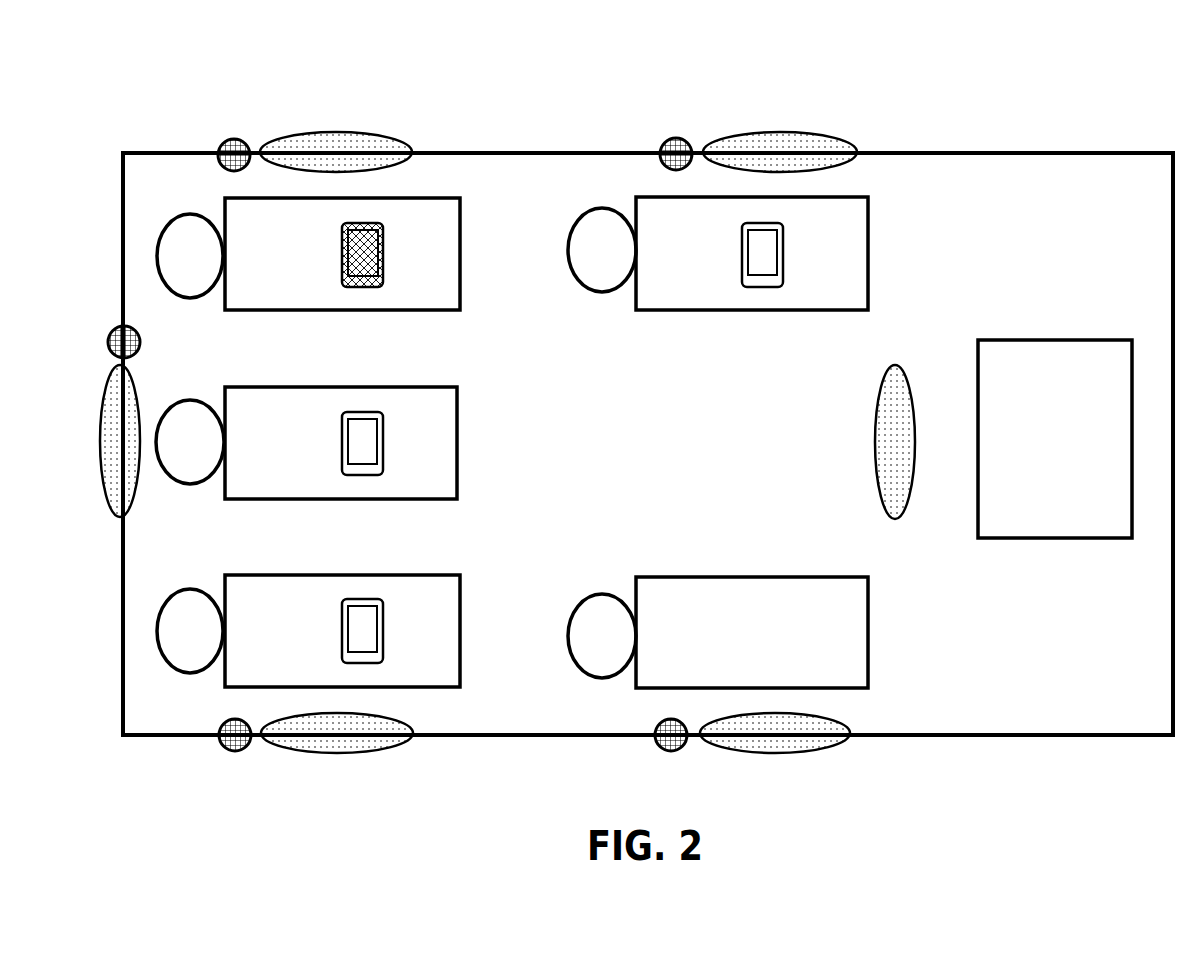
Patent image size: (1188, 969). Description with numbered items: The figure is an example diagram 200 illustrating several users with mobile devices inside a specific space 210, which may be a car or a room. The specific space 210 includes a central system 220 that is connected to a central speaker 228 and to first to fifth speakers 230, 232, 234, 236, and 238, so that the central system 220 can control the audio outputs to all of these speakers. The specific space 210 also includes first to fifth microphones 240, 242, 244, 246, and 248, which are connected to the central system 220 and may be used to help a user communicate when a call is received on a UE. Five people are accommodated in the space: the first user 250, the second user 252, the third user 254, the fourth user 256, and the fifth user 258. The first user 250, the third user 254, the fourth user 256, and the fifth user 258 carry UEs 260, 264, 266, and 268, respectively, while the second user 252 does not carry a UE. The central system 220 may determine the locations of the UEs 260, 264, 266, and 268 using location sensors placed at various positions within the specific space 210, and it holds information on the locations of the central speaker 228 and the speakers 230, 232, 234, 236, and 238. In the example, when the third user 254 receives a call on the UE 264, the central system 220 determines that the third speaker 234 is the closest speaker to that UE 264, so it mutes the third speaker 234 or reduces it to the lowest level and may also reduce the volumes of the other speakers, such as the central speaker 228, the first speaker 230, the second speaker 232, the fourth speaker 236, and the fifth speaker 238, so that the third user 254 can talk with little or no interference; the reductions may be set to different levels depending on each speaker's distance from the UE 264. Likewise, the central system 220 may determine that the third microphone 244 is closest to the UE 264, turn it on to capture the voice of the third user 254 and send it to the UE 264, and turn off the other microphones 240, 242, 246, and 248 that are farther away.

The example diagram 200 is at (72, 99).
The specific space 210 is at (192, 153).
The central system 220 is at (1072, 462).
The central speaker 228 is at (877, 410).
The first speaker 230 is at (798, 132).
The second speaker 232 is at (815, 752).
The third speaker 234 is at (367, 133).
The fourth speaker 236 is at (100, 417).
The fifth speaker 238 is at (362, 753).
The first microphone 240 is at (683, 139).
The second microphone 242 is at (677, 752).
The third microphone 244 is at (242, 140).
The fourth microphone 246 is at (112, 337).
The fifth microphone 248 is at (233, 753).
The User 1 250 is at (700, 279).
The User 2 252 is at (700, 654).
The User 3 254 is at (293, 279).
The User 4 256 is at (293, 466).
The User 5 258 is at (293, 652).
The UE 260 is at (783, 253).
The UE 264 is at (383, 249).
The UE 266 is at (383, 441).
The UE 268 is at (383, 627).